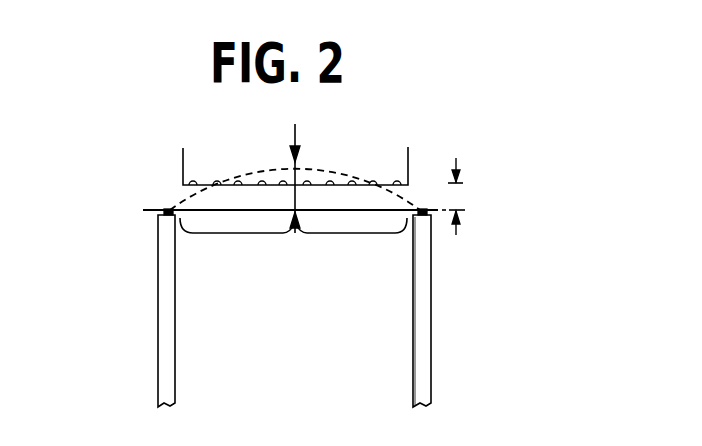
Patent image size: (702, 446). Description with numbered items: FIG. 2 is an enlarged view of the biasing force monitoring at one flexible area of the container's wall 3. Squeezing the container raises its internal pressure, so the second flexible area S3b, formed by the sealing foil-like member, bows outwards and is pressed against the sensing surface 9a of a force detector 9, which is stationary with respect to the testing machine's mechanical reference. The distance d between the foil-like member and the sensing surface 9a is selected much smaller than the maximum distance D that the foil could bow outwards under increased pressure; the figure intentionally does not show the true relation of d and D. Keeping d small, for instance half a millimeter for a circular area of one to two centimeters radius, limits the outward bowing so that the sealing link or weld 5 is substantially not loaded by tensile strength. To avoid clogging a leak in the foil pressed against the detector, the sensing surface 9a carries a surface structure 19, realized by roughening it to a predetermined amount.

The container's wall 3 is at (432, 275).
The sealing link or weld 5 is at (158, 213).
The surface structure 19 is at (212, 172).
The force detector 9 is at (303, 120).
The sensing surface 9a is at (330, 186).
The maximum distance D is at (300, 198).
The distance d is at (463, 196).
The surface region S3b is at (293, 249).